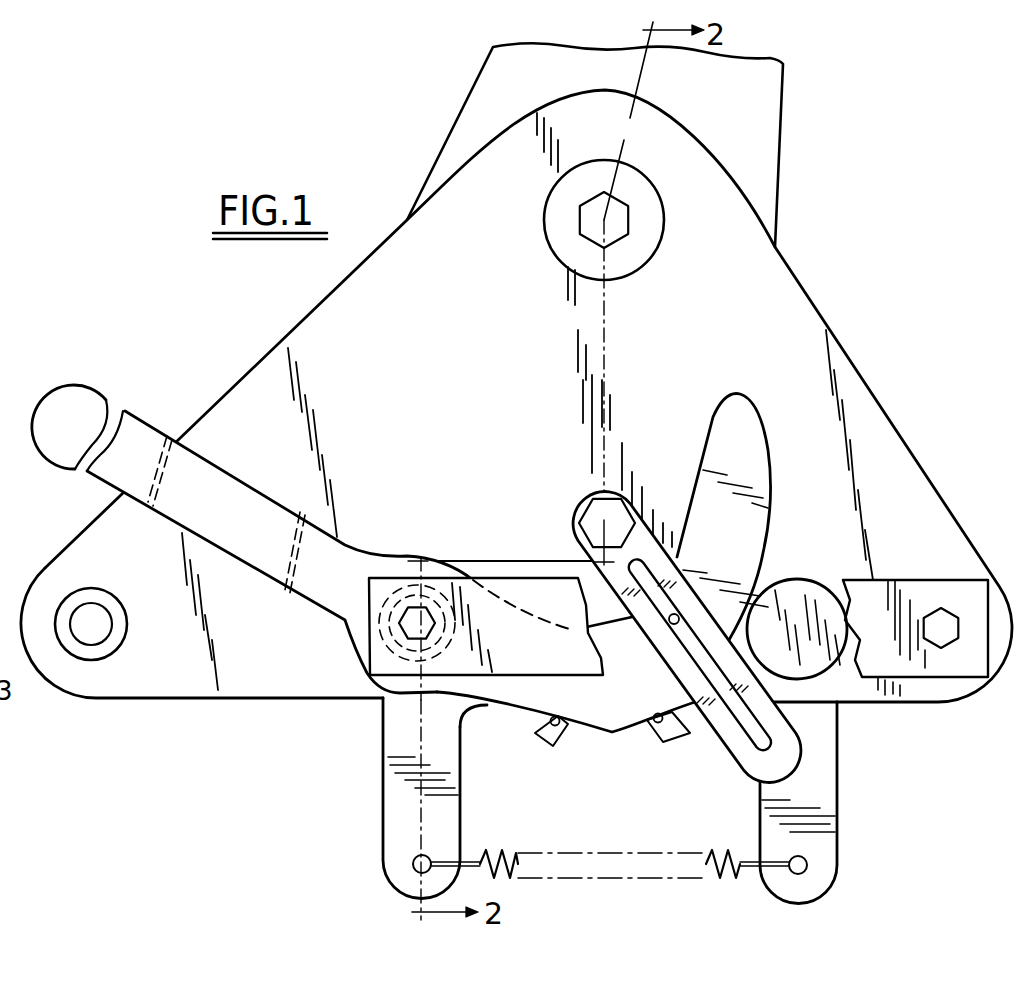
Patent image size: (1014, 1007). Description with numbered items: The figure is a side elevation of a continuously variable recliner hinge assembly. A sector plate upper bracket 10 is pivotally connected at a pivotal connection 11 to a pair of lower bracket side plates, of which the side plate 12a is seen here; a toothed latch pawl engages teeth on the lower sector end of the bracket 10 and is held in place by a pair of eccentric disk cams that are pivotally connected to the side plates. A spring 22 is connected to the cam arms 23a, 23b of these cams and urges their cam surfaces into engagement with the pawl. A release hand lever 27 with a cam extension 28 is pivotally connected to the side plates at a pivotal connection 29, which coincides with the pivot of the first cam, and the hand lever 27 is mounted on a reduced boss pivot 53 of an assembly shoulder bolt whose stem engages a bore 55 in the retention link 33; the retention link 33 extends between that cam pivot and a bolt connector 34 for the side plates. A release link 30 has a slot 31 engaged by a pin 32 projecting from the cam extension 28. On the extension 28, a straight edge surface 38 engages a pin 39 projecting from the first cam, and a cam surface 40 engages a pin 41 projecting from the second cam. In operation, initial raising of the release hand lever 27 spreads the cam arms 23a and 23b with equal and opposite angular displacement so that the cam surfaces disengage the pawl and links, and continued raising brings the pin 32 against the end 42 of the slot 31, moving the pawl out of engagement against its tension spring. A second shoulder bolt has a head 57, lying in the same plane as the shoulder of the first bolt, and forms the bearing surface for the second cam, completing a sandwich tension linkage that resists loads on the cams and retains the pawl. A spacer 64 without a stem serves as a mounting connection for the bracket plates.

The sector plate upper bracket 10 is at (773, 122).
The pivotal connection 11 is at (620, 220).
The lower bracket side plate 12a is at (790, 294).
The spring 22 is at (552, 852).
The cam arm 23a is at (388, 788).
The cam arm 23b is at (763, 810).
The release hand lever 27 is at (167, 404).
The cam extension 28 is at (713, 455).
The pivotal connection 29 is at (422, 613).
The release link 30 is at (736, 647).
The slot 31 is at (733, 728).
The pin 32 is at (670, 625).
The retention link 33 is at (968, 668).
The bolt connector 34 is at (942, 607).
The straight edge surface 38 is at (600, 733).
The pin 39 is at (535, 732).
The cam surface 40 is at (627, 728).
The pin 41 is at (660, 727).
The end of slot 42 is at (770, 745).
The reduced boss pivot 53 is at (370, 658).
The bore 55 is at (22, 582).
The head 57 is at (822, 662).
The spacer 64 is at (101, 672).